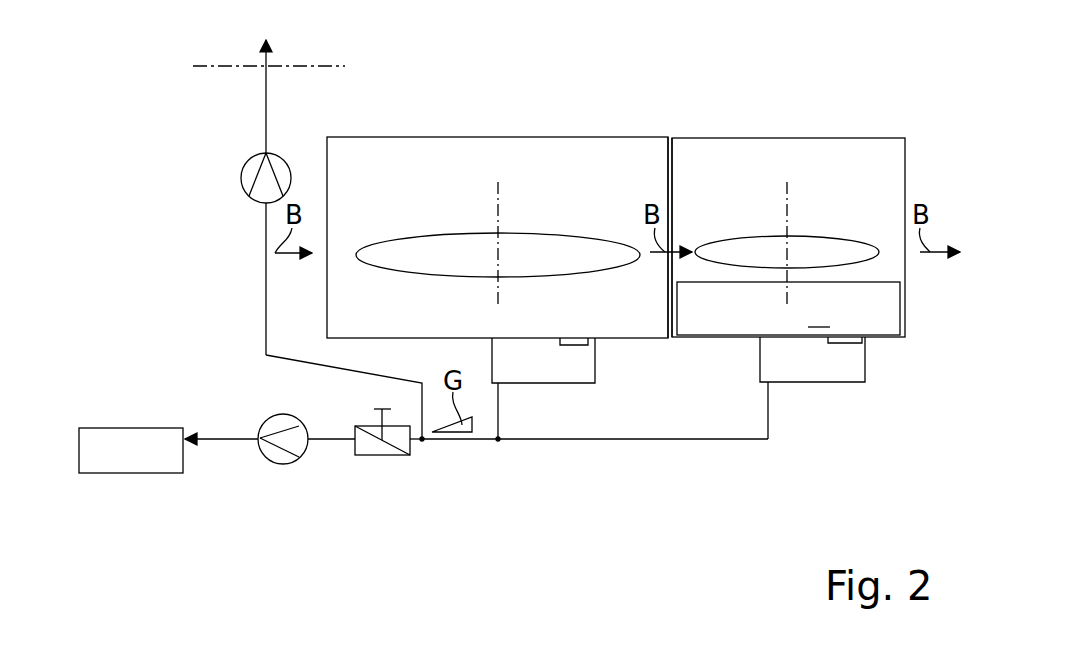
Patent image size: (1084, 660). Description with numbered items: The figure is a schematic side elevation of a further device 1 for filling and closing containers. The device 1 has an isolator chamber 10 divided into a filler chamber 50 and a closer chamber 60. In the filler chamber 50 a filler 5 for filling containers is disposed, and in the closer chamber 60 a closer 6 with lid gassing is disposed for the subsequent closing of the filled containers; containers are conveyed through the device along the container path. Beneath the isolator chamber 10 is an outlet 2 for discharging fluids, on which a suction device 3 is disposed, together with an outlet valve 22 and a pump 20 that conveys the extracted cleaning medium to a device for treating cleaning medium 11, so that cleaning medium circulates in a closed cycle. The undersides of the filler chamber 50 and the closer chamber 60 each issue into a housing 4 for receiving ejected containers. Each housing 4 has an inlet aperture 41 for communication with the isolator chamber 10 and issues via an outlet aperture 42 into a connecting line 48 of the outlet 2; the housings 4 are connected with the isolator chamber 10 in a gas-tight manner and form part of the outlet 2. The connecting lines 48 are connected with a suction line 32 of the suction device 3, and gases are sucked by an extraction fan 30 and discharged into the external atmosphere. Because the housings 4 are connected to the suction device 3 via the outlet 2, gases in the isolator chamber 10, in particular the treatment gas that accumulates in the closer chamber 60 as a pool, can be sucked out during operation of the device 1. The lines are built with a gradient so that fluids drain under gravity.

The device for filling and closing containers 1 is at (820, 64).
The outlet 2 is at (822, 497).
The suction device 3 is at (222, 370).
The housing 4 is at (573, 368).
The filler 5 is at (428, 233).
The closer 6 is at (748, 236).
The isolator chamber 10 is at (712, 137).
The device for treating cleaning medium 11 is at (138, 462).
The pump 20 is at (278, 462).
The outlet valve 22 is at (372, 445).
The extraction fan 30 is at (250, 171).
The suction line 32 is at (328, 368).
The inlet aperture 41 is at (572, 340).
The outlet aperture 42 is at (500, 386).
The connecting line 48 is at (500, 428).
The filler chamber 50 is at (563, 155).
The closer chamber 60 is at (870, 155).